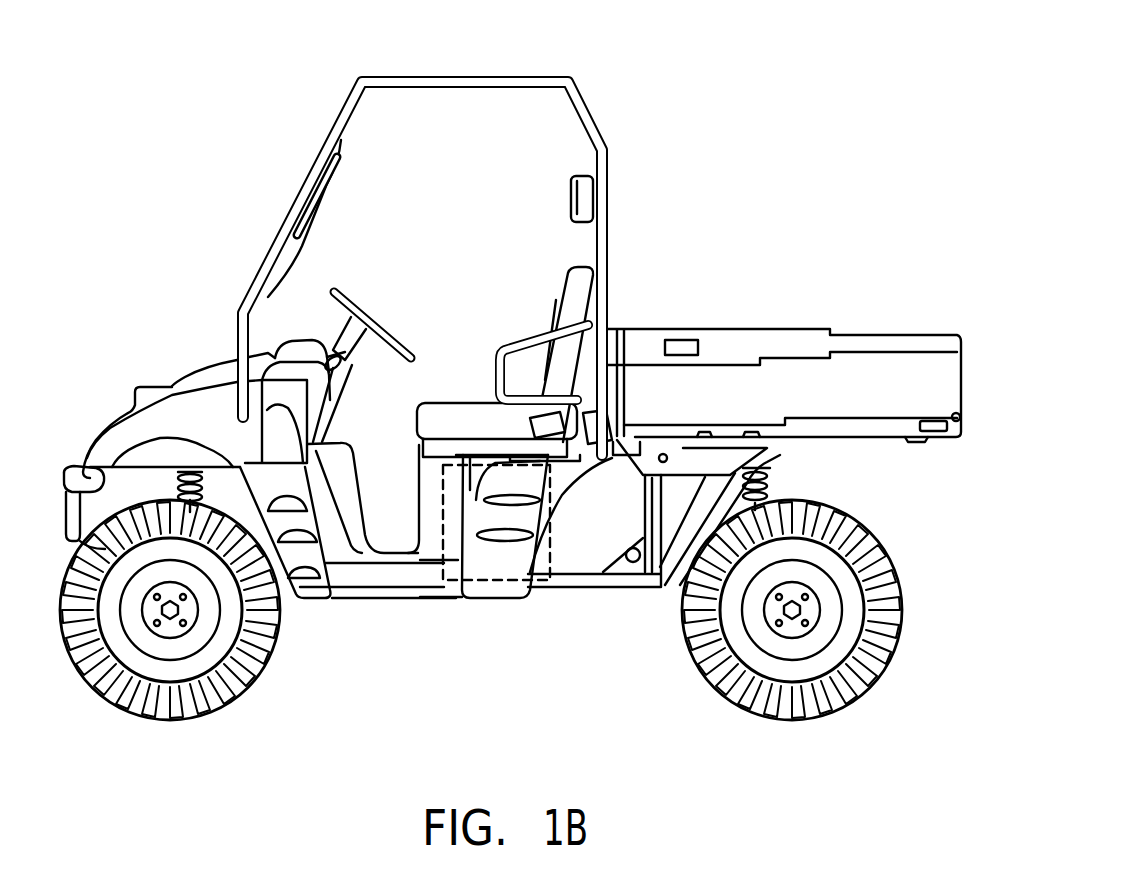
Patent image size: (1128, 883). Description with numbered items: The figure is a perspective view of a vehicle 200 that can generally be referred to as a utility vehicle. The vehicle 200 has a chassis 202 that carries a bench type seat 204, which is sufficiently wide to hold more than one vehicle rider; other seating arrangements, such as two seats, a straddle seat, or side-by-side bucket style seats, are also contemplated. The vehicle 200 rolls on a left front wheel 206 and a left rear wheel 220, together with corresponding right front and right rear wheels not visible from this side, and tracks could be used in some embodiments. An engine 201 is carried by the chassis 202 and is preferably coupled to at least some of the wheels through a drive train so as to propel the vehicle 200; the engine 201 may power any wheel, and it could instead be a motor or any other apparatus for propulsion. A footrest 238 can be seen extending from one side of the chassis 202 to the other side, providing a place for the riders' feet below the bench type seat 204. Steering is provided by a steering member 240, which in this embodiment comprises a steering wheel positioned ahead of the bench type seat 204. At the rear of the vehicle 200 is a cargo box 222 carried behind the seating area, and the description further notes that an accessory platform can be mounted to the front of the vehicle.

The vehicle 200 is at (741, 144).
The engine 201 is at (507, 582).
The chassis 202 is at (600, 587).
The bench type seat 204 is at (450, 402).
The left front wheel 206 is at (168, 716).
The left rear wheel 220 is at (790, 718).
The cargo box 222 is at (887, 330).
The footrest 238 is at (368, 553).
The steering member 240 is at (354, 300).